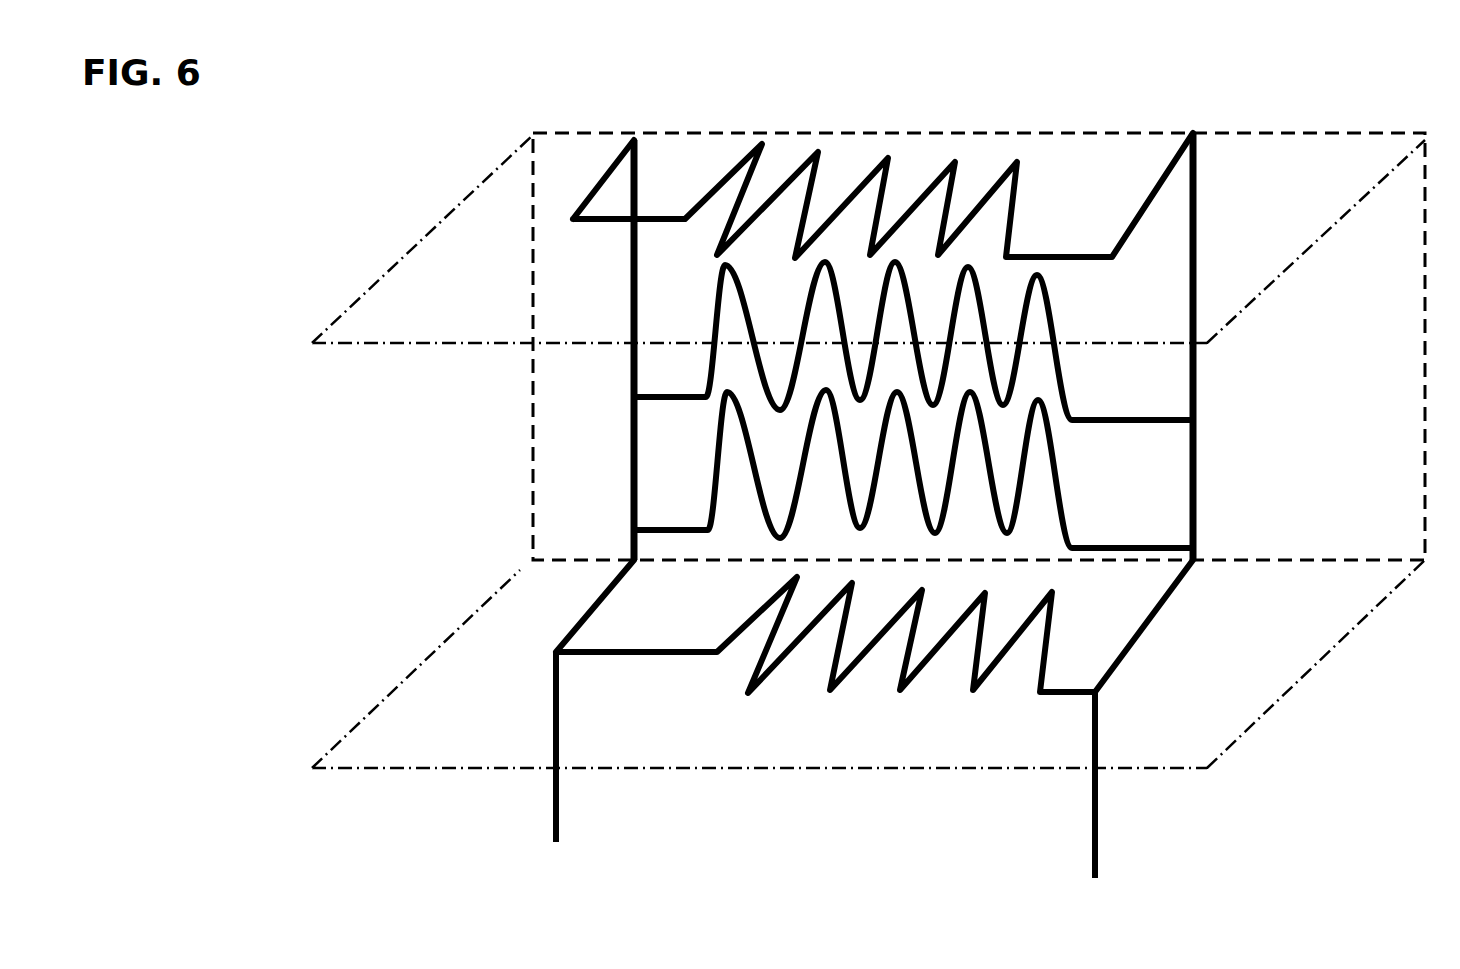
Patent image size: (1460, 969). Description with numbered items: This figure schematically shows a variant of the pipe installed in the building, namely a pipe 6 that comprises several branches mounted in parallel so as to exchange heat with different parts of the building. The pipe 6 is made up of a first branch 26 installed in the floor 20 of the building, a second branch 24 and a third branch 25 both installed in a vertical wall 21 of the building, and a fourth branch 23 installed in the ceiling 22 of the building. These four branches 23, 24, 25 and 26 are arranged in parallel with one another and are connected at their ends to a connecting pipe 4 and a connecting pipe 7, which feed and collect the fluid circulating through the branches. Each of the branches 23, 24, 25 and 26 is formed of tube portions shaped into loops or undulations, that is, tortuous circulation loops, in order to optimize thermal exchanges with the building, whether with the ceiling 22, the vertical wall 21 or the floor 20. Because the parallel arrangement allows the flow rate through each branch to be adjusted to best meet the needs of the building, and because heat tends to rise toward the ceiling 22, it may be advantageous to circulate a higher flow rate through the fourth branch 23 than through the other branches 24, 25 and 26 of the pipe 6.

The pipe 6 is at (1242, 222).
The ceiling 22 is at (477, 235).
The vertical wall 21 is at (592, 430).
The floor 20 is at (1218, 708).
The fourth branch 23 is at (1028, 178).
The second branch 24 is at (1053, 310).
The third branch 25 is at (1068, 500).
The first branch 26 is at (1052, 658).
The connecting pipe 4 is at (558, 792).
The connecting pipe 7 is at (1098, 828).